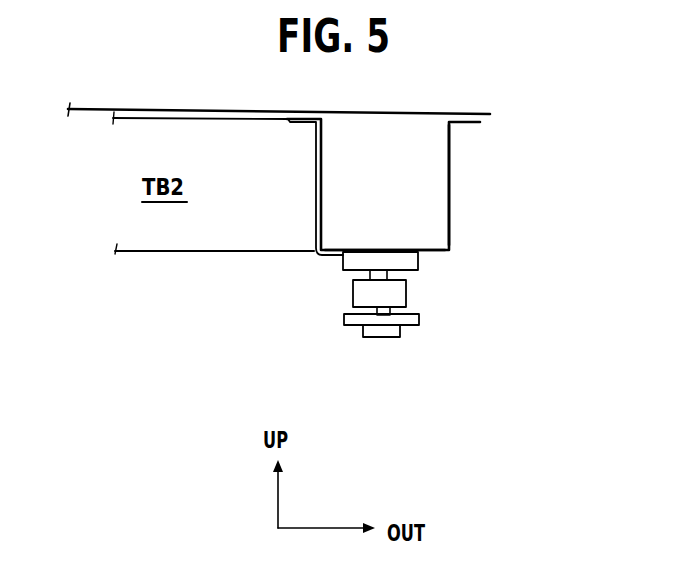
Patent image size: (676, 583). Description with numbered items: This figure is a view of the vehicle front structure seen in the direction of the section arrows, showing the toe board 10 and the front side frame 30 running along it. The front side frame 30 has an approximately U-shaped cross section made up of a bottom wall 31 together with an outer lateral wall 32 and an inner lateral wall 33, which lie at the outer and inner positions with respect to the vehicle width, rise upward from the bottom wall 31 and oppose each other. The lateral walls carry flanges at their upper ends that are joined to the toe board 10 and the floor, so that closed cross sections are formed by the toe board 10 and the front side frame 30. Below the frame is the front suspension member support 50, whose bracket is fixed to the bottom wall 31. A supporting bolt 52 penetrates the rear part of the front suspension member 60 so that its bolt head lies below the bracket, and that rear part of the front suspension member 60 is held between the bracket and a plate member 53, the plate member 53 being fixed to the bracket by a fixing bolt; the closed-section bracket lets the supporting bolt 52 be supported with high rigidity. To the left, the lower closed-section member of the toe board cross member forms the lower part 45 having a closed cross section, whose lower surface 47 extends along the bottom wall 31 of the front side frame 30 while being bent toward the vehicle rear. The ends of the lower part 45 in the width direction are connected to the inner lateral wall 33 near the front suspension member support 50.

The toe board 10 is at (88, 113).
The front side frame 30 is at (452, 202).
The bottom wall 31 is at (438, 252).
The outer lateral wall 32 is at (452, 165).
The inner lateral wall 33 is at (316, 162).
The lower part 45 is at (147, 252).
The lower surface 47 is at (207, 253).
The front suspension member support 50 is at (421, 270).
The supporting bolt 52 is at (402, 338).
The plate member 53 is at (421, 323).
The front suspension member 60 is at (353, 290).